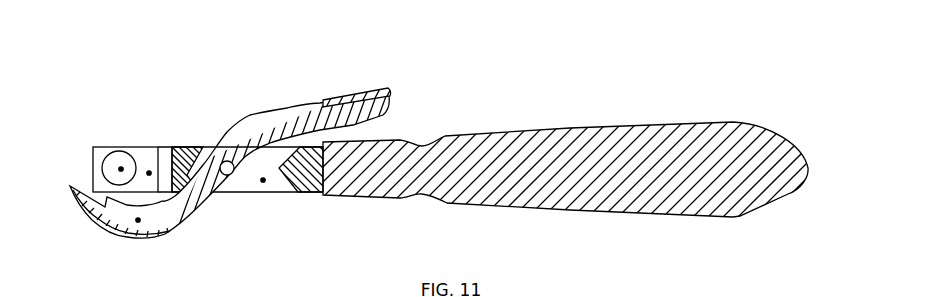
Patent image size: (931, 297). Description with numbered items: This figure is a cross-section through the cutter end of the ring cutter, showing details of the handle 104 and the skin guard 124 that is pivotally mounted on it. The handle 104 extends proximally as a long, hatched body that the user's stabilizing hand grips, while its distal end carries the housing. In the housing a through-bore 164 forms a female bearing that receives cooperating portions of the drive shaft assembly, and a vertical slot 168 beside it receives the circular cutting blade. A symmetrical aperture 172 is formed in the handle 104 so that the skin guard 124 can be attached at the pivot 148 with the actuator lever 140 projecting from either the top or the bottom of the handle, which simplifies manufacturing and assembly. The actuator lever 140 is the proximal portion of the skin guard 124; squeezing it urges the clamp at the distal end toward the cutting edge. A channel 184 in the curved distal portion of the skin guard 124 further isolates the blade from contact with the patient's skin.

The handle 104 is at (594, 165).
The skin guard 124 is at (262, 138).
The actuator lever 140 is at (366, 97).
The pivot 148 is at (228, 176).
The through-bore 164 is at (121, 169).
The vertical slot 168 is at (149, 173).
The symmetrical aperture 172 is at (263, 180).
The channel 184 is at (138, 220).